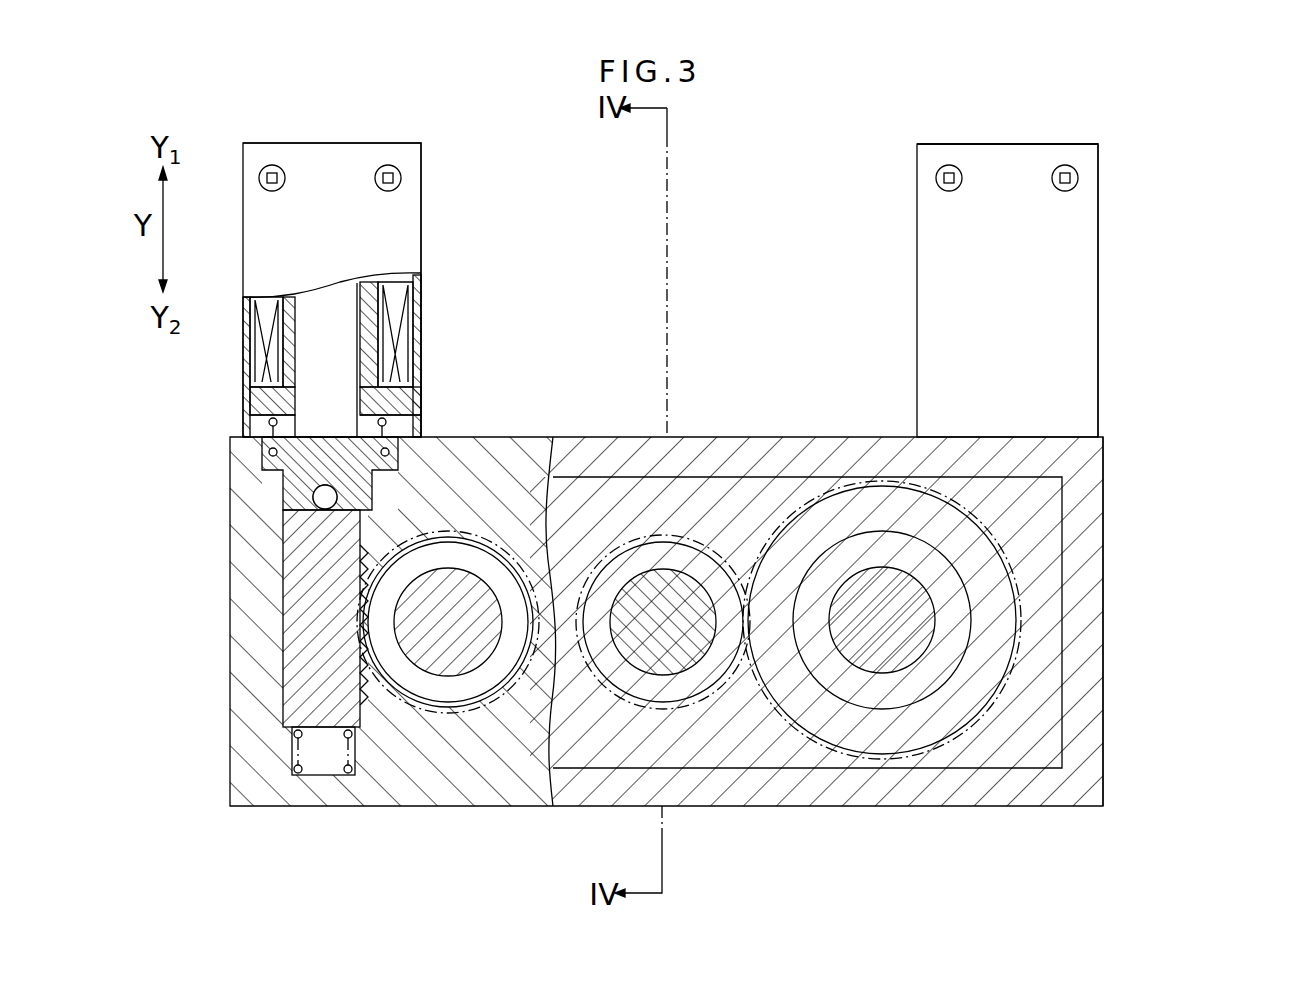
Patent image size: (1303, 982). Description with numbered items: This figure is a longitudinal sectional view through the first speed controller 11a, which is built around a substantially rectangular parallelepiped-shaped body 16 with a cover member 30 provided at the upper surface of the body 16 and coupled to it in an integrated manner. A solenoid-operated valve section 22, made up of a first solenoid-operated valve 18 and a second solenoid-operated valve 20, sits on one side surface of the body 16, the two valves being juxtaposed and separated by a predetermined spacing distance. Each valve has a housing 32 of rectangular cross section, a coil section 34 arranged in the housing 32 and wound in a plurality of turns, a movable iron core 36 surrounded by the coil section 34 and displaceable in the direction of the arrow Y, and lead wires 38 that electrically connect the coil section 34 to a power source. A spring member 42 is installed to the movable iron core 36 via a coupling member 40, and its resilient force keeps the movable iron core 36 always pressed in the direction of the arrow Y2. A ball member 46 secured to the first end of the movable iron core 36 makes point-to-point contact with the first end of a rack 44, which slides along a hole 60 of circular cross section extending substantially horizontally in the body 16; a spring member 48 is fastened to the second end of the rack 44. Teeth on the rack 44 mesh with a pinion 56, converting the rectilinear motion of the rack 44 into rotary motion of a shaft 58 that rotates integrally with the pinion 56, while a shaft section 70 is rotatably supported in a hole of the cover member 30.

The first speed controller 11a is at (1186, 86).
The body 16 is at (411, 780).
The first solenoid-operated valve 18 is at (323, 258).
The second solenoid-operated valve 20 is at (996, 140).
The solenoid-operated valve section 22 is at (1093, 140).
The cover member 30 is at (1083, 678).
The housing 32 is at (402, 207).
The coil section 34 is at (410, 315).
The movable iron core 36 is at (318, 368).
The lead wires 38 is at (268, 164).
The coupling member 40 is at (267, 462).
The spring member 42 is at (250, 417).
The rack 44 is at (303, 607).
The ball member 46 is at (297, 508).
The spring member 48 is at (300, 777).
The pinion 56 is at (472, 710).
The shaft 58 is at (452, 590).
The hole 60 is at (271, 649).
The shaft section 70 is at (663, 648).